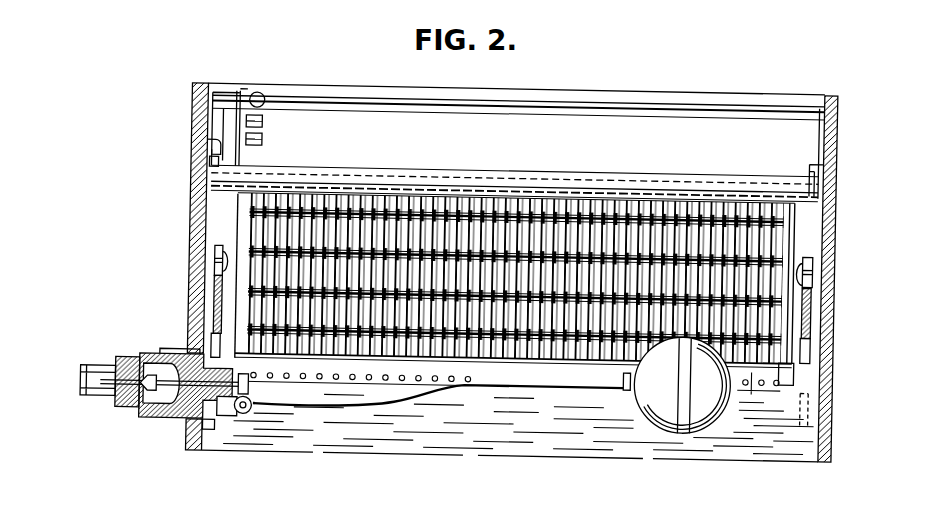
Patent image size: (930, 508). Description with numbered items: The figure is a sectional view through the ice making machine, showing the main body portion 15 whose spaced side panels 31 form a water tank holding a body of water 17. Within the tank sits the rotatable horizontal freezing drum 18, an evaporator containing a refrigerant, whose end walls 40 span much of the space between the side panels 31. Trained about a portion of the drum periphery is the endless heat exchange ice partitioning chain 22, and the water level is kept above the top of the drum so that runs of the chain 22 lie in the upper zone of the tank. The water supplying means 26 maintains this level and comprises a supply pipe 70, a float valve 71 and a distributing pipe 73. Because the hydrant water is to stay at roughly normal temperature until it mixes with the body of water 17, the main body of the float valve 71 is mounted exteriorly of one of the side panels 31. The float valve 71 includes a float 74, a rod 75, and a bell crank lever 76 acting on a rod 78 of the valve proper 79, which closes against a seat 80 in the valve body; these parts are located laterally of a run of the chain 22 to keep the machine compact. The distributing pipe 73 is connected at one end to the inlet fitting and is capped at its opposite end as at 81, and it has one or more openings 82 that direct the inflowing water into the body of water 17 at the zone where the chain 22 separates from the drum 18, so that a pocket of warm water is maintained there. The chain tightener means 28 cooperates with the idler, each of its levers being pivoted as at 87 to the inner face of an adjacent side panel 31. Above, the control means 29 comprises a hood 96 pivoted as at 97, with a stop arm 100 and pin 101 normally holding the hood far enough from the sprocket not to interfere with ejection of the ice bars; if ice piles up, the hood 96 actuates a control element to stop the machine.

The main body portion 15 is at (836, 428).
The body of water 17 is at (588, 448).
The freezing drum 18 is at (240, 199).
The chain 22 is at (436, 194).
The water supplying means 26 is at (178, 352).
The chain tightener means 28 is at (218, 291).
The control means 29 is at (268, 126).
The side panels 31 is at (193, 101).
The end walls 40 is at (240, 231).
The supply pipe 70 is at (92, 400).
The float valve 71 is at (165, 420).
The distributing pipe 73 is at (806, 393).
The float 74 is at (656, 390).
The rod 75 is at (458, 382).
The bell crank lever 76 is at (258, 408).
The valve rod 78 is at (219, 430).
The valve proper 79 is at (172, 420).
The seat 80 is at (132, 410).
The cap 81 is at (799, 363).
The openings 82 is at (386, 374).
The pivot 87 is at (220, 262).
The hood 96 is at (684, 118).
The hood pivot 97 is at (826, 183).
The stop arm 100 is at (211, 160).
The pin 101 is at (208, 140).